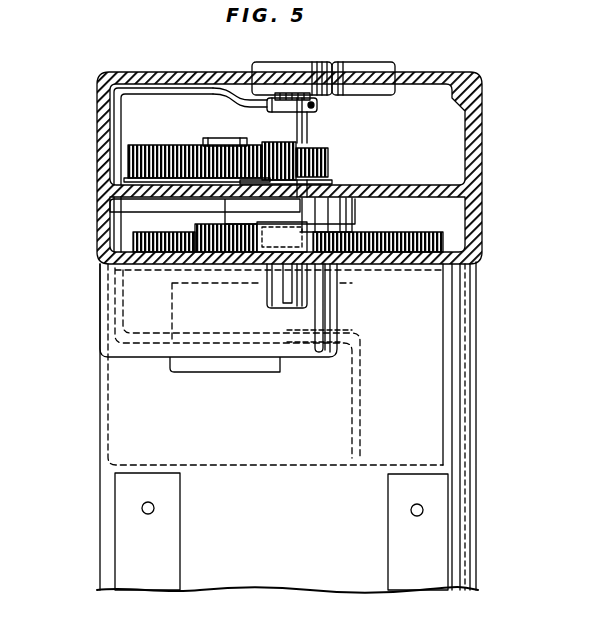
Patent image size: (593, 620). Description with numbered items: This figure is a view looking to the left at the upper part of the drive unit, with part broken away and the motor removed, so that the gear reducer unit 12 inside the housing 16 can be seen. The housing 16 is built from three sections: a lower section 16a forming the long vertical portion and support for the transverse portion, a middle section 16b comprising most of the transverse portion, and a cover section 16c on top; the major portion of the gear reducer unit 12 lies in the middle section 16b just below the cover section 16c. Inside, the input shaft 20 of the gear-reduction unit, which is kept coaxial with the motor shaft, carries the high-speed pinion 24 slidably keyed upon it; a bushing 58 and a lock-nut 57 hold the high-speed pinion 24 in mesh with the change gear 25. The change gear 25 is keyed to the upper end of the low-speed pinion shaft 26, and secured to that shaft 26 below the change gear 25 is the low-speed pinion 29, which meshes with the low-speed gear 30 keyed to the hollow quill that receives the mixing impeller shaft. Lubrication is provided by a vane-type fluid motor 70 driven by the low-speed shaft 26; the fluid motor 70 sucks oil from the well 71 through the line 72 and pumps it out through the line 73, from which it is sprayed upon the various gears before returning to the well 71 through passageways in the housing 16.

The gear reducer unit 12 is at (262, 136).
The housing 16 is at (101, 455).
The lower section 16a is at (104, 409).
The middle section 16b is at (99, 154).
The cover section 16c is at (133, 74).
The input shaft 20 is at (300, 290).
The high-speed pinion 24 is at (300, 140).
The change gear 25 is at (151, 160).
The low-speed pinion shaft 26 is at (222, 138).
The low-speed pinion 29 is at (215, 241).
The low-speed gear 30 is at (143, 240).
The lock-nut 57 is at (318, 104).
The bushing 58 is at (292, 127).
The vane-type fluid motor 70 is at (221, 320).
The well 71 is at (404, 388).
The line 72 is at (350, 428).
The line 73 is at (213, 88).